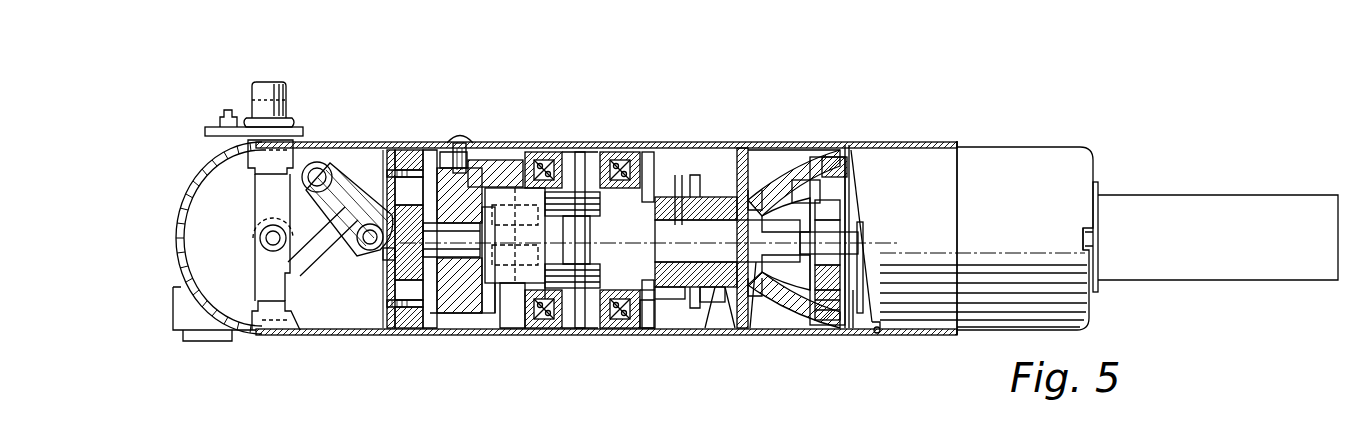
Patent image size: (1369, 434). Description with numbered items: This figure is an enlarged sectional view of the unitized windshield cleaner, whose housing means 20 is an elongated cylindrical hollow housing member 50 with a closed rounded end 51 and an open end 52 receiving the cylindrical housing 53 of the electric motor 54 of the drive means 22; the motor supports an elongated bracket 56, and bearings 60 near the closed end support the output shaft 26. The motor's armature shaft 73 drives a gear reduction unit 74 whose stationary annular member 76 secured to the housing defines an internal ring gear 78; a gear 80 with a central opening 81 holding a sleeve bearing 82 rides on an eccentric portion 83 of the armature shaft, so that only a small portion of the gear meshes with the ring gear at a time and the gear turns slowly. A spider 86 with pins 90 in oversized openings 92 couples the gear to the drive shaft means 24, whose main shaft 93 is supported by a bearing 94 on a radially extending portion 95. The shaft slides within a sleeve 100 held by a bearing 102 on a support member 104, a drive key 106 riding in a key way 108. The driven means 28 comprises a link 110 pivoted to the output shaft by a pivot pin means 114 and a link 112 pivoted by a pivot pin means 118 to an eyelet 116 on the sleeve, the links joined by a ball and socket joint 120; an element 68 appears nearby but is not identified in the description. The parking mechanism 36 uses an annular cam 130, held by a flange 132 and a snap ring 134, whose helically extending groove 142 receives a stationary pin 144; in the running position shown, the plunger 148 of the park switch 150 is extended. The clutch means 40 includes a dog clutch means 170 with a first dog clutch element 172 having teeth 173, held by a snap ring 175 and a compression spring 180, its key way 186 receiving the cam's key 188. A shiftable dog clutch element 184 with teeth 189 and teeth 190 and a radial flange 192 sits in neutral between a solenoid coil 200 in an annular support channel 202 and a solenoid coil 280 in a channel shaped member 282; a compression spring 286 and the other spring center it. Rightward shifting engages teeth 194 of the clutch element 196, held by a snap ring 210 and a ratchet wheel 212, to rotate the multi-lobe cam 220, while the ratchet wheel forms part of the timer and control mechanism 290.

The housing means 20 is at (946, 142).
The drive means 22 is at (790, 155).
The drive shaft means 24 is at (776, 182).
The output shaft 26 is at (266, 113).
The driven means 28 is at (300, 204).
The parking mechanism 36 is at (398, 338).
The clutch means 40 is at (583, 140).
The housing member 50 is at (318, 336).
The closed rounded end 51 is at (185, 240).
The open end 52 is at (880, 330).
The cylindrical housing 53 is at (1017, 166).
The electric motor 54 is at (1098, 160).
The bracket 56 is at (1223, 208).
The bearings 60 is at (272, 157).
The bracket 68 is at (205, 130).
The armature shaft 73 is at (852, 238).
The gear reduction unit 74 is at (860, 307).
The annular member 76 is at (775, 306).
The internal ring gear 78 is at (830, 195).
The gear 80 is at (820, 185).
The central opening 81 is at (840, 208).
The sleeve bearing 82 is at (860, 260).
The eccentric portion 83 is at (845, 243).
The spider 86 is at (812, 178).
The pins 90 is at (845, 286).
The oversized openings 92 is at (850, 322).
The main shaft 93 is at (716, 230).
The bearing 94 is at (757, 178).
The radially extending portion 95 is at (733, 330).
The sleeve 100 is at (430, 168).
The bearing 102 is at (400, 200).
The support member 104 is at (395, 330).
The drive key 106 is at (490, 222).
The key way 108 is at (390, 276).
The link 110 is at (263, 220).
The link 112 is at (343, 170).
The pivot pin means 114 is at (270, 246).
The eyelet 116 is at (383, 254).
The pivot pin means 118 is at (356, 240).
The ball and socket joint 120 is at (318, 162).
The annular cam 130 is at (452, 313).
The flange 132 is at (480, 232).
The snap ring 134 is at (448, 305).
The helically extending groove 142 is at (480, 150).
The stationary pin 144 is at (457, 138).
The plunger 148 is at (410, 170).
The park switch 150 is at (382, 172).
The dog clutch means 170 is at (620, 165).
The first dog clutch element 172 is at (544, 312).
The dogs or teeth 173 is at (544, 162).
The snap ring 175 is at (518, 152).
The compression spring 180 is at (572, 178).
The shiftable dog clutch element 184 is at (628, 312).
The key way 186 is at (505, 300).
The key 188 is at (490, 300).
The teeth 189 is at (556, 192).
The teeth 190 is at (548, 250).
The radial flange 192 is at (638, 186).
The teeth 194 is at (640, 200).
The clutch element 196 is at (660, 178).
The solenoid coil 200 is at (575, 325).
The annular support channel 202 is at (594, 290).
The snap ring 210 is at (652, 290).
The ratchet wheel 212 is at (718, 286).
The multi-lobe cam 220 is at (742, 200).
The solenoid coil 280 is at (650, 322).
The channel shaped member 282 is at (650, 316).
The compression spring 286 is at (690, 200).
The timer and control mechanism 290 is at (718, 290).